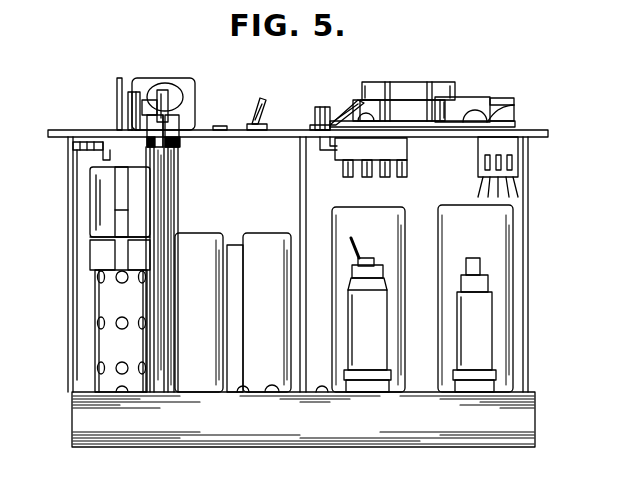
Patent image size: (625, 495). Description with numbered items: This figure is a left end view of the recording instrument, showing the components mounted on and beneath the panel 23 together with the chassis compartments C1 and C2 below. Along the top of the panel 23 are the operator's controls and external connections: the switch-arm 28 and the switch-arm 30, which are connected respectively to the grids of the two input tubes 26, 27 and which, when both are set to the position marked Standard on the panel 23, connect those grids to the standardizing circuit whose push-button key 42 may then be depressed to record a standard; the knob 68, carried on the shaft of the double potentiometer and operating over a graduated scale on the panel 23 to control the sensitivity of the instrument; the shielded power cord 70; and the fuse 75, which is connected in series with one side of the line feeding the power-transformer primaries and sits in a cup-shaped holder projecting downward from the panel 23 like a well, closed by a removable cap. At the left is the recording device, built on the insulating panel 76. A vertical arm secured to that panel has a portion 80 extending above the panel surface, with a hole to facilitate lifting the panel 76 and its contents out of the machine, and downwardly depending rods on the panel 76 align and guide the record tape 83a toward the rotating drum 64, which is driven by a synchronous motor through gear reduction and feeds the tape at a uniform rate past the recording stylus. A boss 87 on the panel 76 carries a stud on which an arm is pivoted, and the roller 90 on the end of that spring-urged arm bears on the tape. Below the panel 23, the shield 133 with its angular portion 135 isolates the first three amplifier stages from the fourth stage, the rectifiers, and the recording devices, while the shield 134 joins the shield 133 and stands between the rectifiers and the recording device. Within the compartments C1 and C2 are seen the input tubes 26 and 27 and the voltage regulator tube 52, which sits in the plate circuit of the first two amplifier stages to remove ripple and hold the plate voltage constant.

The panel 23 is at (57, 134).
The input tube 26 is at (360, 307).
The input tube 27 is at (482, 313).
The switch-arm 28 is at (361, 104).
The switch-arm 30 is at (466, 96).
The push-button key 42 is at (507, 98).
The voltage regulator tube 52 is at (105, 302).
The rotating drum 64 is at (183, 114).
The knob 68 is at (407, 84).
The power cord 70 is at (253, 101).
The fuse 75 is at (314, 113).
The panel 76 is at (216, 128).
The portion of vertical arm 80 is at (117, 90).
The record tape 83a is at (180, 143).
The boss 87 is at (130, 84).
The roller 90 is at (160, 90).
The shield 133 is at (301, 212).
The shield 134 is at (78, 240).
The angular portion of shield 135 is at (529, 197).
The first compartment C1 is at (347, 223).
The second compartment C2 is at (495, 238).